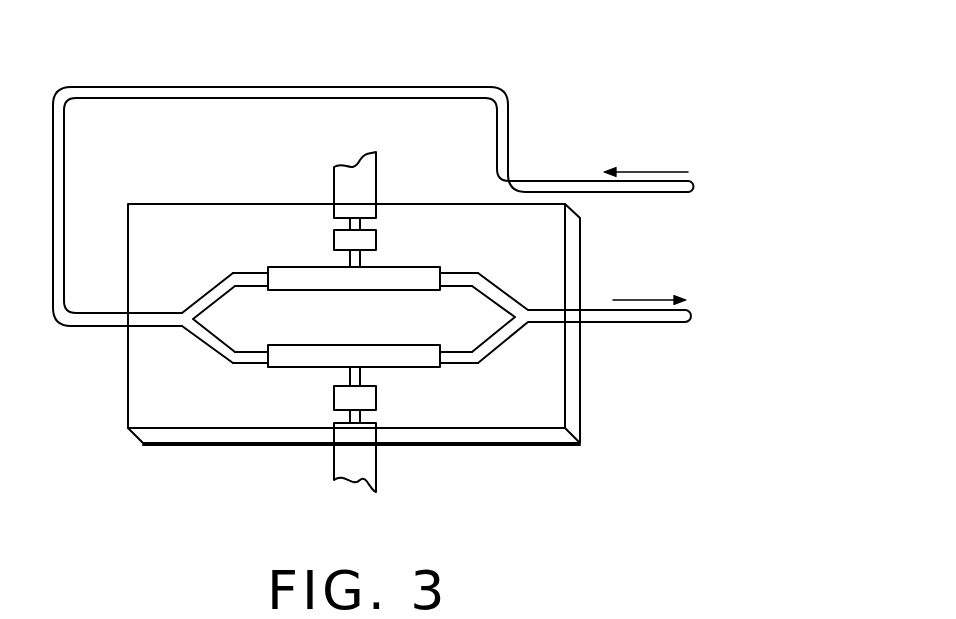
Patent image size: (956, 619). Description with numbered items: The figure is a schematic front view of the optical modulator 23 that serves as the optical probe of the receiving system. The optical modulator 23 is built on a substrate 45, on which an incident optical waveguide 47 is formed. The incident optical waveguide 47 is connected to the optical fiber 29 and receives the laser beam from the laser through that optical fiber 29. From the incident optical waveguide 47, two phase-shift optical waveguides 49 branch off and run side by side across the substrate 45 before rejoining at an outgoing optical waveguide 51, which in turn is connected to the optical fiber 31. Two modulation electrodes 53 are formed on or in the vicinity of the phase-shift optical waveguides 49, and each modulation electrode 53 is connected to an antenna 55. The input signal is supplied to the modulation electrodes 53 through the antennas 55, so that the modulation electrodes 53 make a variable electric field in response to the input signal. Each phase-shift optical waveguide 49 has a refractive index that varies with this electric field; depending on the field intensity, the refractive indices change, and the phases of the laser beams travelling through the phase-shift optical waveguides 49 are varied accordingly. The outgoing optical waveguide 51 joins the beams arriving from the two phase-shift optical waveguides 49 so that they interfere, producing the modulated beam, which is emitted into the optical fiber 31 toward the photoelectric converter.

The optical modulator 23 is at (210, 462).
The optical fiber 29 is at (303, 87).
The optical fiber 31 is at (642, 318).
The substrate 45 is at (537, 438).
The incident optical waveguide 47 is at (163, 325).
The phase-shift optical waveguides 49 is at (248, 272).
The outgoing optical waveguide 51 is at (537, 318).
The modulation electrodes 53 is at (333, 267).
The antennas 55 is at (382, 167).